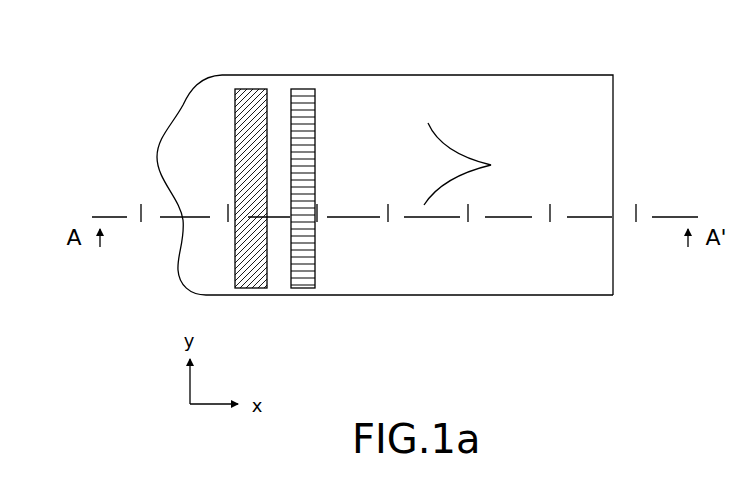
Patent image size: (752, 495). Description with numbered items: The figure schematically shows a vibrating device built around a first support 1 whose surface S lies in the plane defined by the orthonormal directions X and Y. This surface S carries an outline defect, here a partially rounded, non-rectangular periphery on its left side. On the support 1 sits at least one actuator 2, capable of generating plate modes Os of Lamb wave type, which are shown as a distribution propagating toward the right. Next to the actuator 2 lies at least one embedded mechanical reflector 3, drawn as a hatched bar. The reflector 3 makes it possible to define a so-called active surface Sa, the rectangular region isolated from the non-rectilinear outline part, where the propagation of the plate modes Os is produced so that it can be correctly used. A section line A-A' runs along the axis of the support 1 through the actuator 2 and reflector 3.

The first support 1 is at (387, 92).
The actuator 2 is at (296, 288).
The embedded mechanical reflector 3 is at (255, 288).
The surface S is at (195, 113).
The active surface Sa is at (538, 268).
The plate modes Os is at (465, 145).